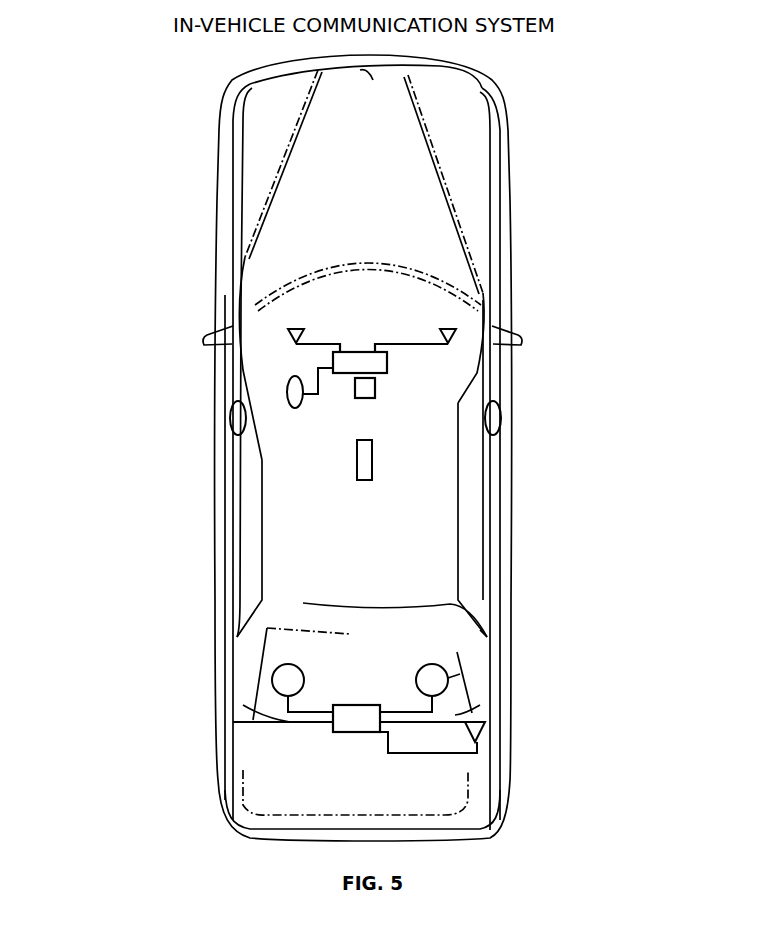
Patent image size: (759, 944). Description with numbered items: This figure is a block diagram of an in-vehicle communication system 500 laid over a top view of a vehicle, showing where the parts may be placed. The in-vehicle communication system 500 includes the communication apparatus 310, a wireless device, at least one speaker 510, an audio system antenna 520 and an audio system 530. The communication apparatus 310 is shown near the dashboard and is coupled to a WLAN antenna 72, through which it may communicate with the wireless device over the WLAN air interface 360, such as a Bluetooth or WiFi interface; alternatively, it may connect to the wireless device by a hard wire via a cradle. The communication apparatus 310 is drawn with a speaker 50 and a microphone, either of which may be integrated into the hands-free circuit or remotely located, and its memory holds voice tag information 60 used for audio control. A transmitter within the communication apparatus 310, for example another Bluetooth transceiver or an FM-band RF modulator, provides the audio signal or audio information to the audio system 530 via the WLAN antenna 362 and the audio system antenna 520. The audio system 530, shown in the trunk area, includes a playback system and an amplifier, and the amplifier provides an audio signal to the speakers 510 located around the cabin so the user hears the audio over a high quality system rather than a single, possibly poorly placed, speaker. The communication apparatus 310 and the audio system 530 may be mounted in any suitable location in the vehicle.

The in-vehicle communication system 500 is at (720, 276).
The communication apparatus 310 is at (368, 325).
The WLAN antenna 72 is at (291, 337).
The WLAN antenna 362 is at (546, 313).
The speaker 50 is at (287, 388).
The voice tag information 60 is at (360, 392).
The WLAN air interface 360 is at (367, 463).
The speaker 510 is at (523, 433).
The audio system 530 is at (365, 732).
The audio system antenna 520 is at (483, 733).